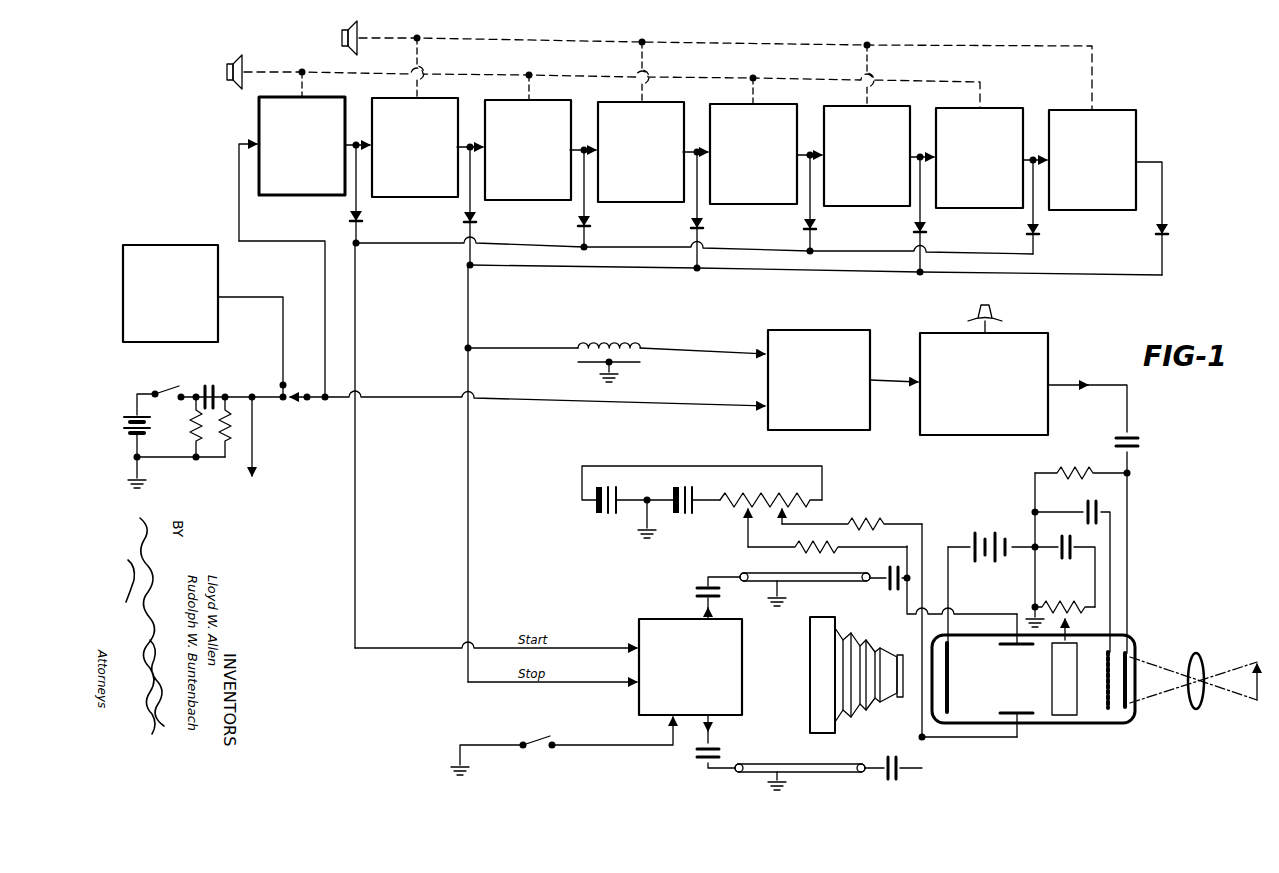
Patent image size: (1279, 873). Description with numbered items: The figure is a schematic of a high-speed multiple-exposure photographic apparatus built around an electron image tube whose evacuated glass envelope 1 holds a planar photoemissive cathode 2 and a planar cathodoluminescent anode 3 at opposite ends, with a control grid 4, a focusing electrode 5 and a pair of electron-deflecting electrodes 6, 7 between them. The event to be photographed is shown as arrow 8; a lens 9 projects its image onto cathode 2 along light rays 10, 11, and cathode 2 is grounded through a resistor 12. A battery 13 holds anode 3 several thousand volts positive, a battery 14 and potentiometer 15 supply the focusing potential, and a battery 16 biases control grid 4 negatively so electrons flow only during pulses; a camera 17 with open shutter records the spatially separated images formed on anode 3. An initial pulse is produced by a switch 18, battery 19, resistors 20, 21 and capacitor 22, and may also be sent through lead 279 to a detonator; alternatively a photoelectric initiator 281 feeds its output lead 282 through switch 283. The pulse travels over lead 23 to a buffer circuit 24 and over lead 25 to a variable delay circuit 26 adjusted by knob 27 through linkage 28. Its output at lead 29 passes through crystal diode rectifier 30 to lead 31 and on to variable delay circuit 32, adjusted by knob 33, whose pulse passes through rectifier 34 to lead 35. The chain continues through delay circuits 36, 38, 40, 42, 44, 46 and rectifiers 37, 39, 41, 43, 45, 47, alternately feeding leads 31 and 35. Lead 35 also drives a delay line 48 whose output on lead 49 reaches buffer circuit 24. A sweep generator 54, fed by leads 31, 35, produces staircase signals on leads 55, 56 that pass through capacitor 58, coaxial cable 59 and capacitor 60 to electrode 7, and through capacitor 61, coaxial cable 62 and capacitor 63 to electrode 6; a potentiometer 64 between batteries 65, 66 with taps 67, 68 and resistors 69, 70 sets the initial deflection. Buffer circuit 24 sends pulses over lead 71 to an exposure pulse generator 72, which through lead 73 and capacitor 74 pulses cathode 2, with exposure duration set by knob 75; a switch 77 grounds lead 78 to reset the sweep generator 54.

The evacuated glass envelope 1 is at (1045, 723).
The planar photoemissive cathode 2 is at (1123, 710).
The planar cathodoluminescent anode 3 is at (950, 697).
The control grid 4 is at (1101, 698).
The focusing electrode 5 is at (1053, 690).
The electron-deflecting electrode 6 is at (1012, 652).
The electron-deflecting electrode 7 is at (1010, 697).
The arrow representing event 8 is at (1253, 686).
The lens 9 is at (1200, 656).
The light ray 10 is at (1246, 656).
The light ray 11 is at (1222, 698).
The resistor 12 is at (1084, 450).
The battery 13 is at (1000, 522).
The battery 14 is at (1052, 563).
The potentiometer 15 is at (1064, 597).
The battery 16 is at (1092, 502).
The camera 17 is at (810, 672).
The switch 18 is at (176, 376).
The battery 19 is at (123, 419).
The resistor 20 is at (186, 436).
The resistor 21 is at (237, 436).
The capacitor 22 is at (208, 385).
The lead 23 is at (530, 388).
The buffer circuit 24 is at (832, 316).
The lead 25 is at (239, 175).
The variable delay circuit 26 is at (283, 196).
The adjustment knob 27 is at (234, 58).
The mechanical linkage 28 is at (302, 88).
The lead 29 is at (348, 148).
The crystal diode rectifier 30 is at (366, 217).
The lead 31 is at (365, 302).
The variable delay circuit 32 is at (413, 198).
The adjustment knob 33 is at (340, 36).
The crystal diode rectifier 34 is at (480, 219).
The lead 35 is at (478, 302).
The variable delay circuit 36 is at (538, 200).
The crystal diode rectifier 37 is at (594, 223).
The variable delay circuit 38 is at (650, 202).
The crystal diode rectifier 39 is at (707, 225).
The variable delay circuit 40 is at (768, 204).
The crystal diode rectifier 41 is at (818, 226).
The variable delay circuit 42 is at (877, 206).
The crystal diode rectifier 43 is at (930, 229).
The variable delay circuit 44 is at (988, 208).
The crystal diode rectifier 45 is at (1043, 231).
The variable delay circuit 46 is at (1105, 210).
The crystal diode rectifier 47 is at (1170, 232).
The delay line 48 is at (625, 322).
The lead 49 is at (712, 340).
The sweep generator 54 is at (644, 601).
The lead 55 is at (716, 735).
The lead 56 is at (702, 613).
The capacitor 58 is at (699, 760).
The coaxial cable 59 is at (796, 749).
The capacitor 60 is at (894, 764).
The capacitor 61 is at (704, 592).
The coaxial cable 62 is at (838, 590).
The capacitor 63 is at (886, 562).
The potentiometer 64 is at (780, 483).
The battery 65 is at (692, 493).
The battery 66 is at (602, 520).
The adjustable tap 67 is at (743, 534).
The adjustable tap 68 is at (770, 524).
The resistor 69 is at (790, 554).
The resistor 70 is at (866, 513).
The lead 71 is at (903, 364).
The exposure pulse generator 72 is at (1028, 334).
The lead 73 is at (1132, 420).
The capacitor 74 is at (1145, 450).
The adjustment knob 75 is at (992, 312).
The switch 77 is at (545, 722).
The lead 78 is at (606, 724).
The lead 279 is at (254, 444).
The photoelectric initiator 281 is at (177, 245).
The output lead 282 is at (280, 333).
The switch 283 is at (296, 393).